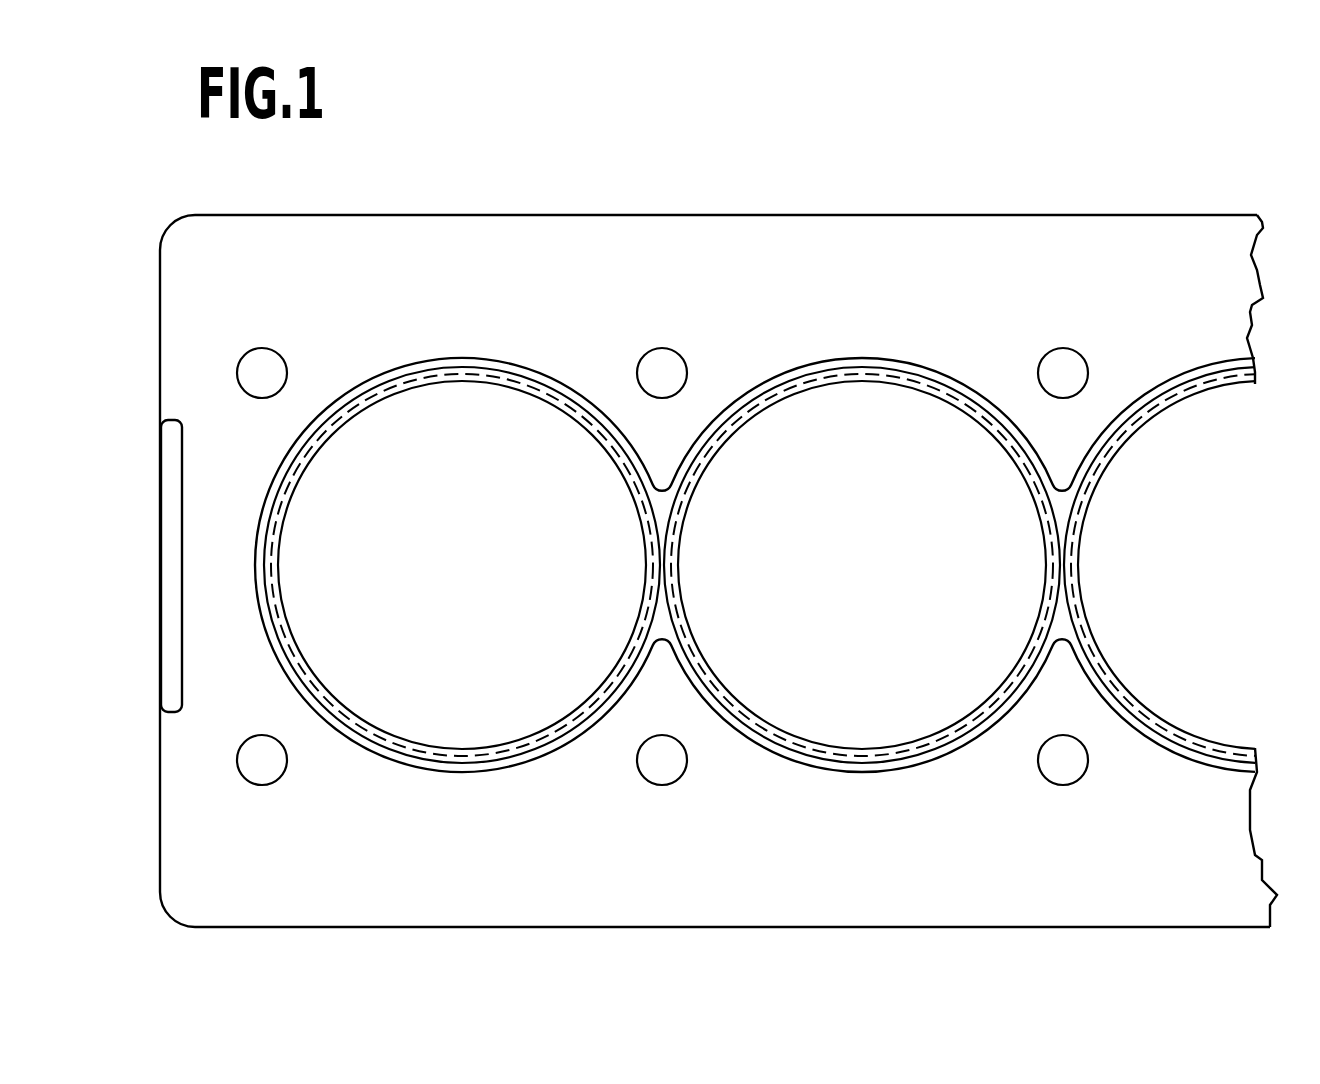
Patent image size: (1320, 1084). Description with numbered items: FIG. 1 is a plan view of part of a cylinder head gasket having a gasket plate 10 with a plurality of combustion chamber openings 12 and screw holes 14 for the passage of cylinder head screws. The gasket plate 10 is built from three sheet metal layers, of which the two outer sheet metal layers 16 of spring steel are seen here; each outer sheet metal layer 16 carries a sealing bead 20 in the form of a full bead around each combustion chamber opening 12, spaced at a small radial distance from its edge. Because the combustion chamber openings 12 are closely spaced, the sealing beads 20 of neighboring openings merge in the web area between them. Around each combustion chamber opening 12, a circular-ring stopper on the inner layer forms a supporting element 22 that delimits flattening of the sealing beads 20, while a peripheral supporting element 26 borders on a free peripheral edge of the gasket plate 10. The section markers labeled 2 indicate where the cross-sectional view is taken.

The gasket plate 10 is at (760, 185).
The combustion chamber opening 12 is at (457, 573).
The screw hole 14 is at (258, 370).
The outer sheet metal layer 16 is at (847, 880).
The sealing bead 20 is at (838, 366).
The supporting element 22 is at (898, 378).
The supporting element 26 is at (178, 562).
The section line 2- 2 is at (615, 565).